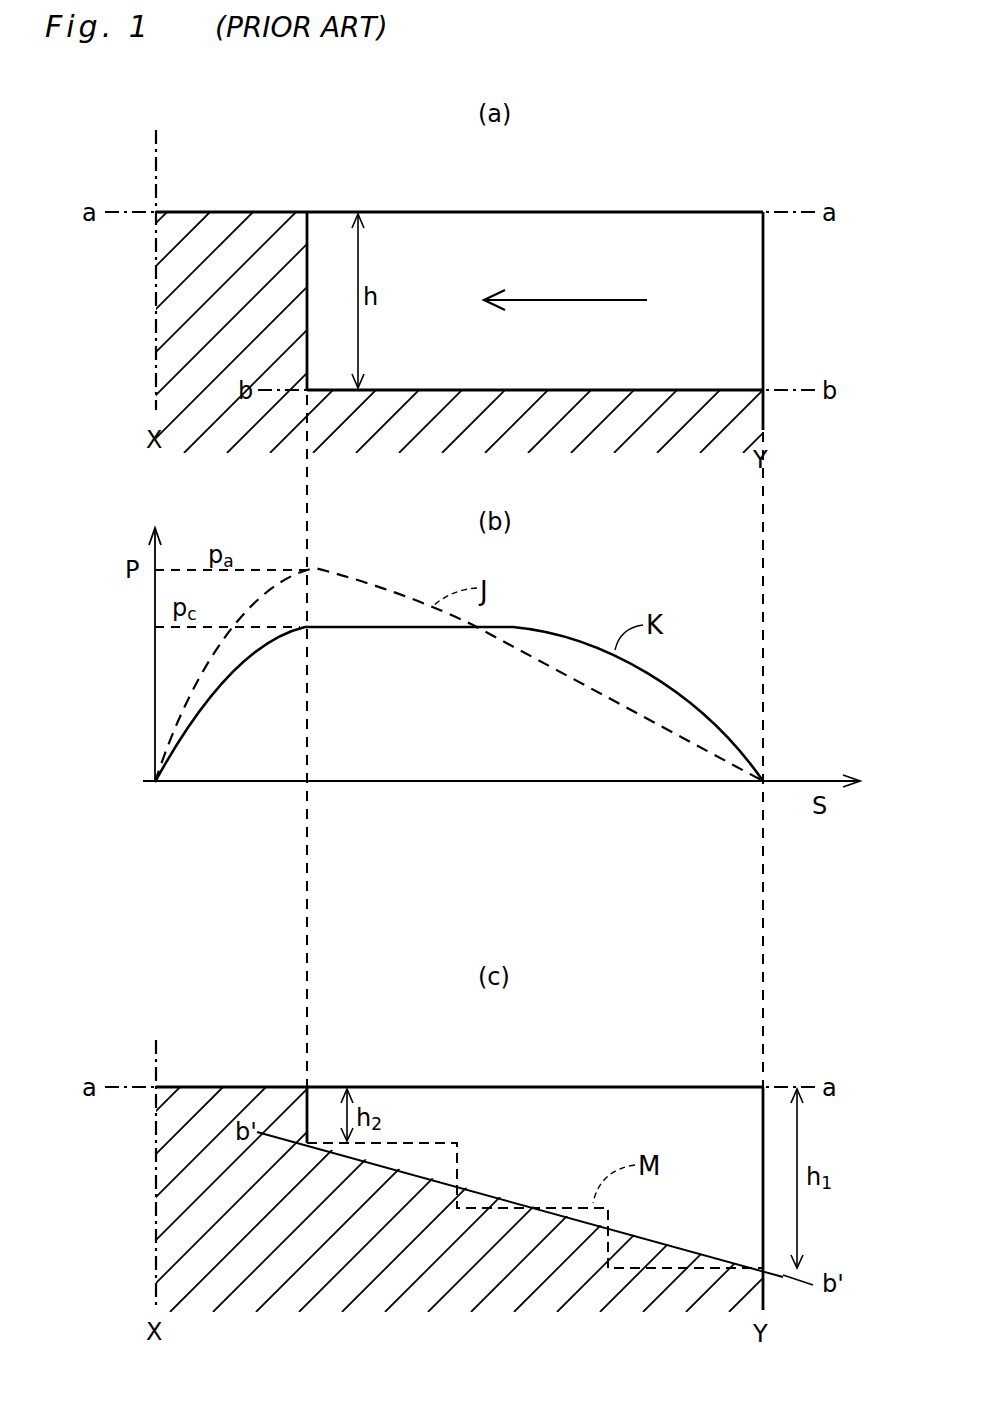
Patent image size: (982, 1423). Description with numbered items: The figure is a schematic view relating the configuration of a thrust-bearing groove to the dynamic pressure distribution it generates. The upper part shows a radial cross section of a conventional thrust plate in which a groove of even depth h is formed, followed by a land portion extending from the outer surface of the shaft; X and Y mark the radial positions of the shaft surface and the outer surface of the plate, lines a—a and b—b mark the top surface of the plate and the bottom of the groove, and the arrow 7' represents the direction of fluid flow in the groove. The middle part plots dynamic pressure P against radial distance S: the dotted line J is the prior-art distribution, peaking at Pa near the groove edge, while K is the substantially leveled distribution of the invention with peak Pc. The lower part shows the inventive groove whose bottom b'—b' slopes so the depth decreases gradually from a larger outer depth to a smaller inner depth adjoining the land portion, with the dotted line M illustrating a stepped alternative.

The arrow 7' is at (565, 267).